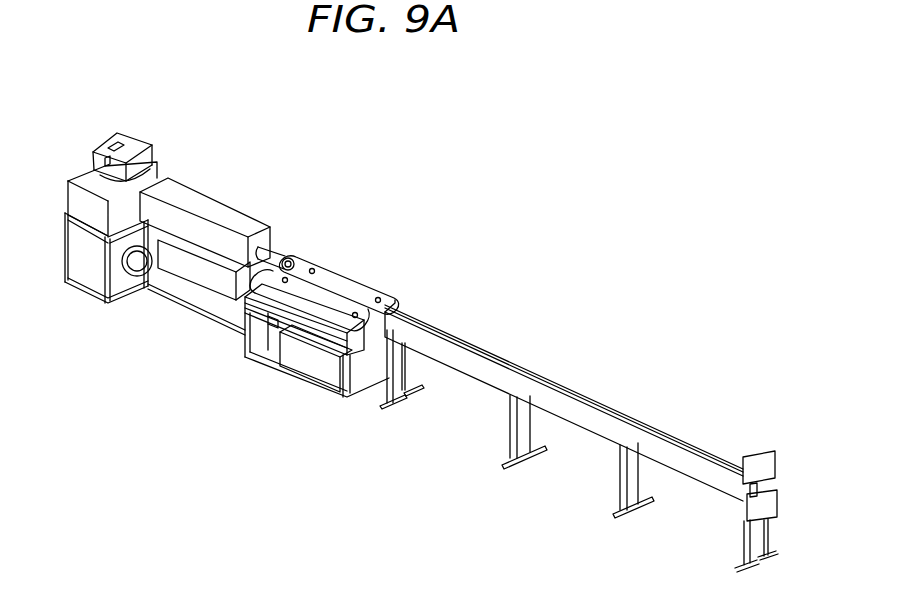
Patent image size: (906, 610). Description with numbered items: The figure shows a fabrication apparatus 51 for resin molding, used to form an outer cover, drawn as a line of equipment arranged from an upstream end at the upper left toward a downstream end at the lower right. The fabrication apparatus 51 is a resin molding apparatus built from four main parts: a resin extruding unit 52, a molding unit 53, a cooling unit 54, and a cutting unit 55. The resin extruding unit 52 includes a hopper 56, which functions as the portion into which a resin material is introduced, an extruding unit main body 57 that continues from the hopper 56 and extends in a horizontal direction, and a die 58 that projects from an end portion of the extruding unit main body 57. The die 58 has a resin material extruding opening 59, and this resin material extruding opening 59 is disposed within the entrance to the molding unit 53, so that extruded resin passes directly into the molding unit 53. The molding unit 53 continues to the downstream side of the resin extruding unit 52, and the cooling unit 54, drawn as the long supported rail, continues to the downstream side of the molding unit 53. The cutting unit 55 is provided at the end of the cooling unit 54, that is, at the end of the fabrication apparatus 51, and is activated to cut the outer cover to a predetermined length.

The fabrication apparatus 51 is at (508, 250).
The resin extruding unit 52 is at (253, 192).
The molding unit 53 is at (361, 266).
The cooling unit 54 is at (580, 390).
The cutting unit 55 is at (748, 492).
The hopper 56 is at (138, 141).
The extruding unit main body 57 is at (258, 246).
The die 58 is at (292, 262).
The resin material extruding opening 59 is at (303, 266).